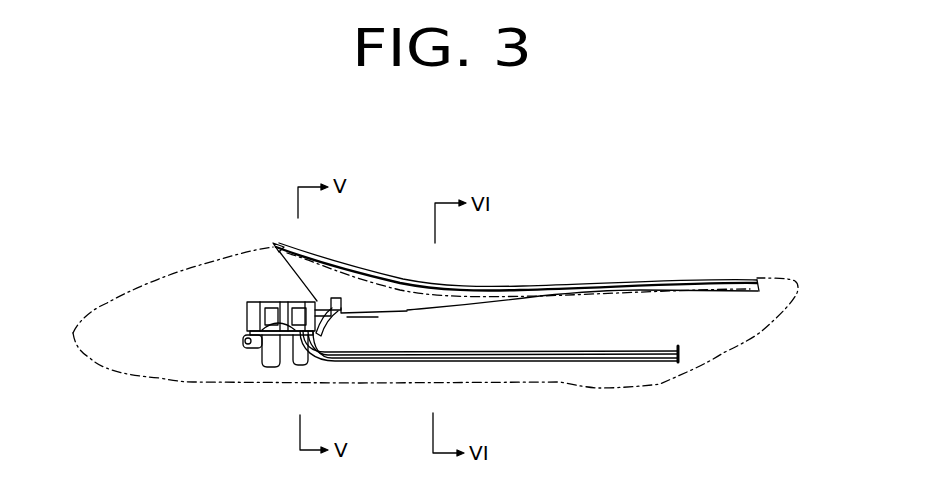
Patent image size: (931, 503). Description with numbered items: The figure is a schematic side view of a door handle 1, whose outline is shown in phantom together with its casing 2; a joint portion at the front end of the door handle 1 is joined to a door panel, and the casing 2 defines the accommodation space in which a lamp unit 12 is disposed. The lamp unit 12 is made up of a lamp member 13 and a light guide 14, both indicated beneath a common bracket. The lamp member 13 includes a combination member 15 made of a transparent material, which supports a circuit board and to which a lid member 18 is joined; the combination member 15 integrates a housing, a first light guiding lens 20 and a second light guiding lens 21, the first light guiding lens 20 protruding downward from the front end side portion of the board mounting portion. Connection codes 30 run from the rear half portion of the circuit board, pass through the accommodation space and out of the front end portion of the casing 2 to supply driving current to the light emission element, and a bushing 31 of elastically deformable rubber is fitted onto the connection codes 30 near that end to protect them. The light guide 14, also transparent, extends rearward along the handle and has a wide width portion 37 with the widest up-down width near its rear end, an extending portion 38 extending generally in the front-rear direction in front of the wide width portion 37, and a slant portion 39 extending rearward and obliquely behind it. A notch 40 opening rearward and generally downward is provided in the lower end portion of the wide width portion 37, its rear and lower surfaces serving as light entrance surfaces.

The door handle 1 is at (131, 215).
The casing 2 is at (185, 272).
The lamp unit 12 is at (240, 167).
The lamp member 13 is at (252, 302).
The light guide 14 is at (273, 245).
The combination member 15 is at (247, 347).
The lid member 18 is at (245, 325).
The first light guiding lens 20 is at (302, 364).
The second light guiding lens 21 is at (345, 300).
The connection codes 30 is at (677, 349).
The bushing 31 is at (277, 365).
The wide width portion 37 is at (343, 288).
The extending portion 38 is at (512, 298).
The slant portion 39 is at (293, 247).
The notch 40 is at (340, 332).